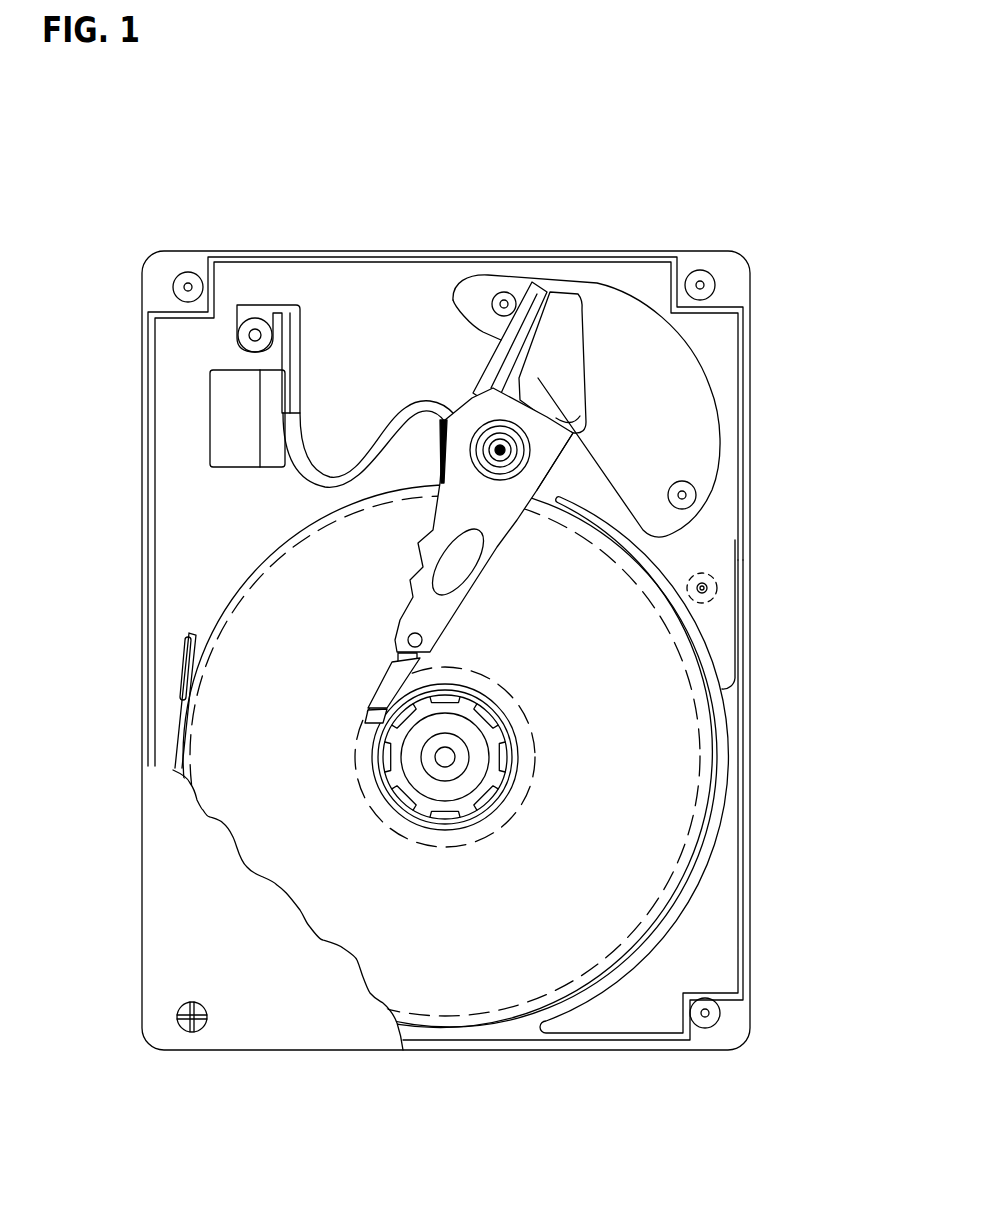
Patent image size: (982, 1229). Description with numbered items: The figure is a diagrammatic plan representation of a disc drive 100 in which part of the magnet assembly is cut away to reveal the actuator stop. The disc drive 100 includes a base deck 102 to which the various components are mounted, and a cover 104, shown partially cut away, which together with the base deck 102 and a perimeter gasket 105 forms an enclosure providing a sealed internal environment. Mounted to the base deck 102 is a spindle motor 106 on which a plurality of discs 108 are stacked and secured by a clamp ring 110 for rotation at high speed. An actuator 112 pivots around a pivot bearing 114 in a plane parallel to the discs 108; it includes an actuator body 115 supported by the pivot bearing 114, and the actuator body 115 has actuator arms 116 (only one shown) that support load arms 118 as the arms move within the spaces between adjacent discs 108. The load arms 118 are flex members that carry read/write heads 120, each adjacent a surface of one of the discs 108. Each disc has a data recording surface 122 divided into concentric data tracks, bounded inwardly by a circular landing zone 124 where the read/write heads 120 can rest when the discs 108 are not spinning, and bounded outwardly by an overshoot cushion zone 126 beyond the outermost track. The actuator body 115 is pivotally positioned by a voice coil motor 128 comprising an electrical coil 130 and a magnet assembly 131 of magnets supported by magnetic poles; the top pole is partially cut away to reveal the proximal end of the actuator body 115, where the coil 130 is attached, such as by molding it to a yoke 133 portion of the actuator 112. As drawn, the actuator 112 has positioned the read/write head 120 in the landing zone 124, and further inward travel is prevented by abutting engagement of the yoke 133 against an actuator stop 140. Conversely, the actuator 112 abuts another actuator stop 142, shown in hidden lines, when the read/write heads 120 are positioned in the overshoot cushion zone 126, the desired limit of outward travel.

The disc drive 100 is at (280, 203).
The base deck 102 is at (207, 563).
The cover 104 is at (190, 906).
The perimeter gasket 105 is at (673, 250).
The spindle motor 106 is at (449, 780).
The discs 108 is at (722, 735).
The clamp ring 110 is at (502, 738).
The actuator 112 is at (488, 520).
The pivot bearing 114 is at (507, 460).
The actuator body 115 is at (570, 452).
The actuator arms 116 is at (406, 605).
The load arms 118 is at (385, 675).
The read/write heads 120 is at (368, 710).
The data recording surface 122 is at (652, 825).
The landing zone 124 is at (370, 795).
The overshoot cushion zone 126 is at (223, 620).
The voice coil motor 128 is at (480, 277).
The electrical coil 130 is at (553, 318).
The magnet assembly 131 is at (675, 425).
The yoke 133 is at (497, 352).
The actuator stop 140 is at (504, 291).
The actuator stop 142 is at (712, 597).